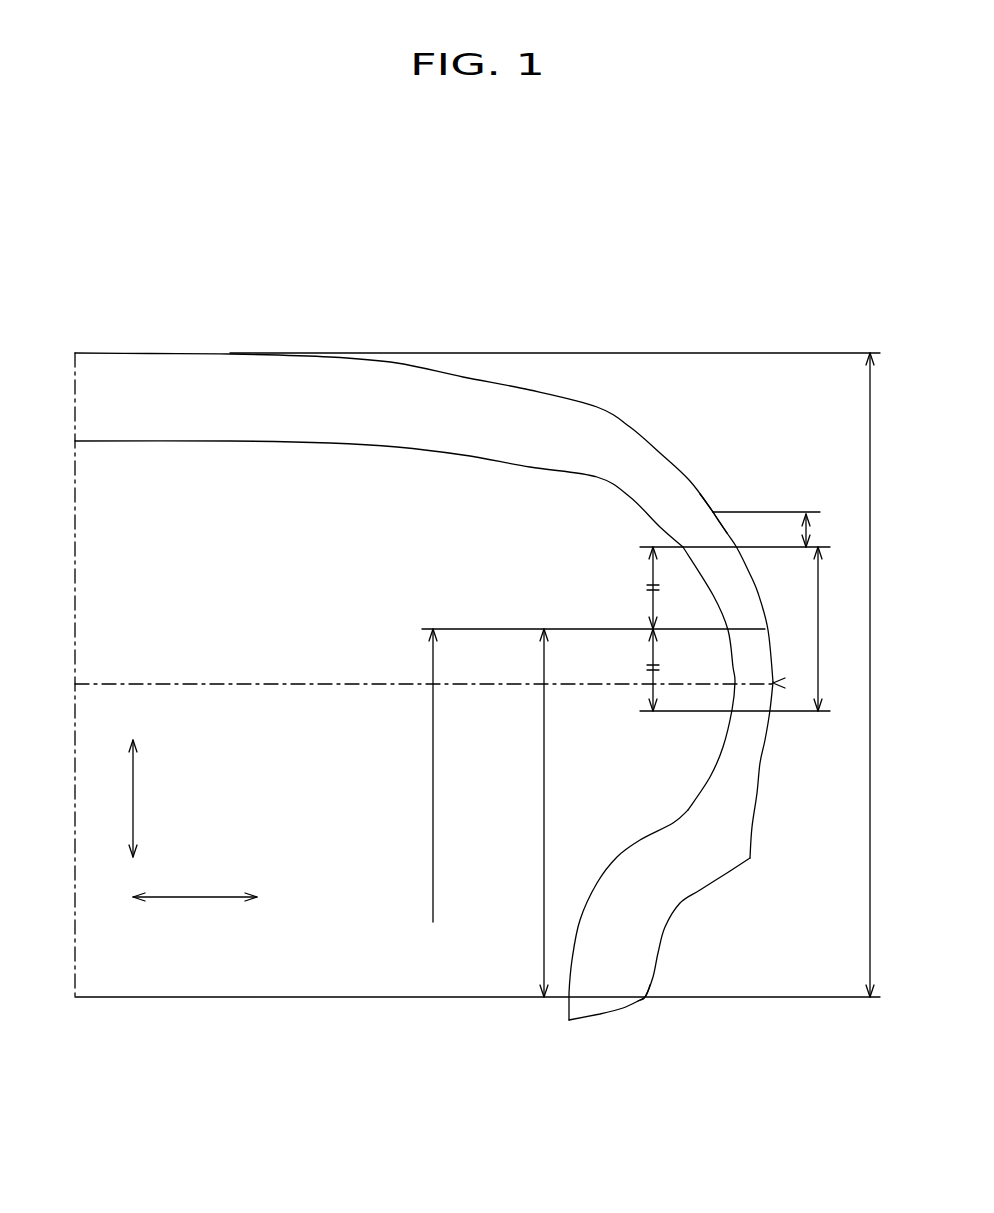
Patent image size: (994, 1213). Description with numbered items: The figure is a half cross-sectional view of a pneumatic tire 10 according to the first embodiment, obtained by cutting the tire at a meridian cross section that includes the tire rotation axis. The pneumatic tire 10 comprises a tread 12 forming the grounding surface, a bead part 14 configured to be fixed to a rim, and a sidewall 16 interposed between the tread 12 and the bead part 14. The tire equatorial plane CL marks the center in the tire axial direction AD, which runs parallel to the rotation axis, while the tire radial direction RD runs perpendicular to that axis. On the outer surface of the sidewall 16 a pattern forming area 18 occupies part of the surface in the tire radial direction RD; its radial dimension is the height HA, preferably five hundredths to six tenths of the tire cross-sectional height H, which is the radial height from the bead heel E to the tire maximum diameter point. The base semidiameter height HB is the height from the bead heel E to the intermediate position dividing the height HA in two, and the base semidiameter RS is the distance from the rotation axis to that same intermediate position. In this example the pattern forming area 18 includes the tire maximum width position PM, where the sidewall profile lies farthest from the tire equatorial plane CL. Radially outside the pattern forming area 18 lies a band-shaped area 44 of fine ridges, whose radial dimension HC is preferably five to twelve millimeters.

The pneumatic tire 10 is at (166, 227).
The tread 12 is at (230, 354).
The bead part 14 is at (607, 1007).
The sidewall 16 is at (763, 765).
The pattern forming area 18 is at (760, 600).
The band-shaped area 44 is at (727, 533).
The tire equatorial plane CL is at (74, 388).
The bead heel E is at (645, 998).
The tire maximum width position PM is at (773, 683).
The tire cross-sectional height H is at (488, 675).
The height of the pattern forming area HA is at (819, 618).
The base semidiameter height HB is at (544, 822).
The dimension of the band-shaped area HC is at (808, 532).
The base semidiameter RS is at (433, 866).
The tire radial direction RD is at (156, 798).
The tire axial direction AD is at (195, 915).